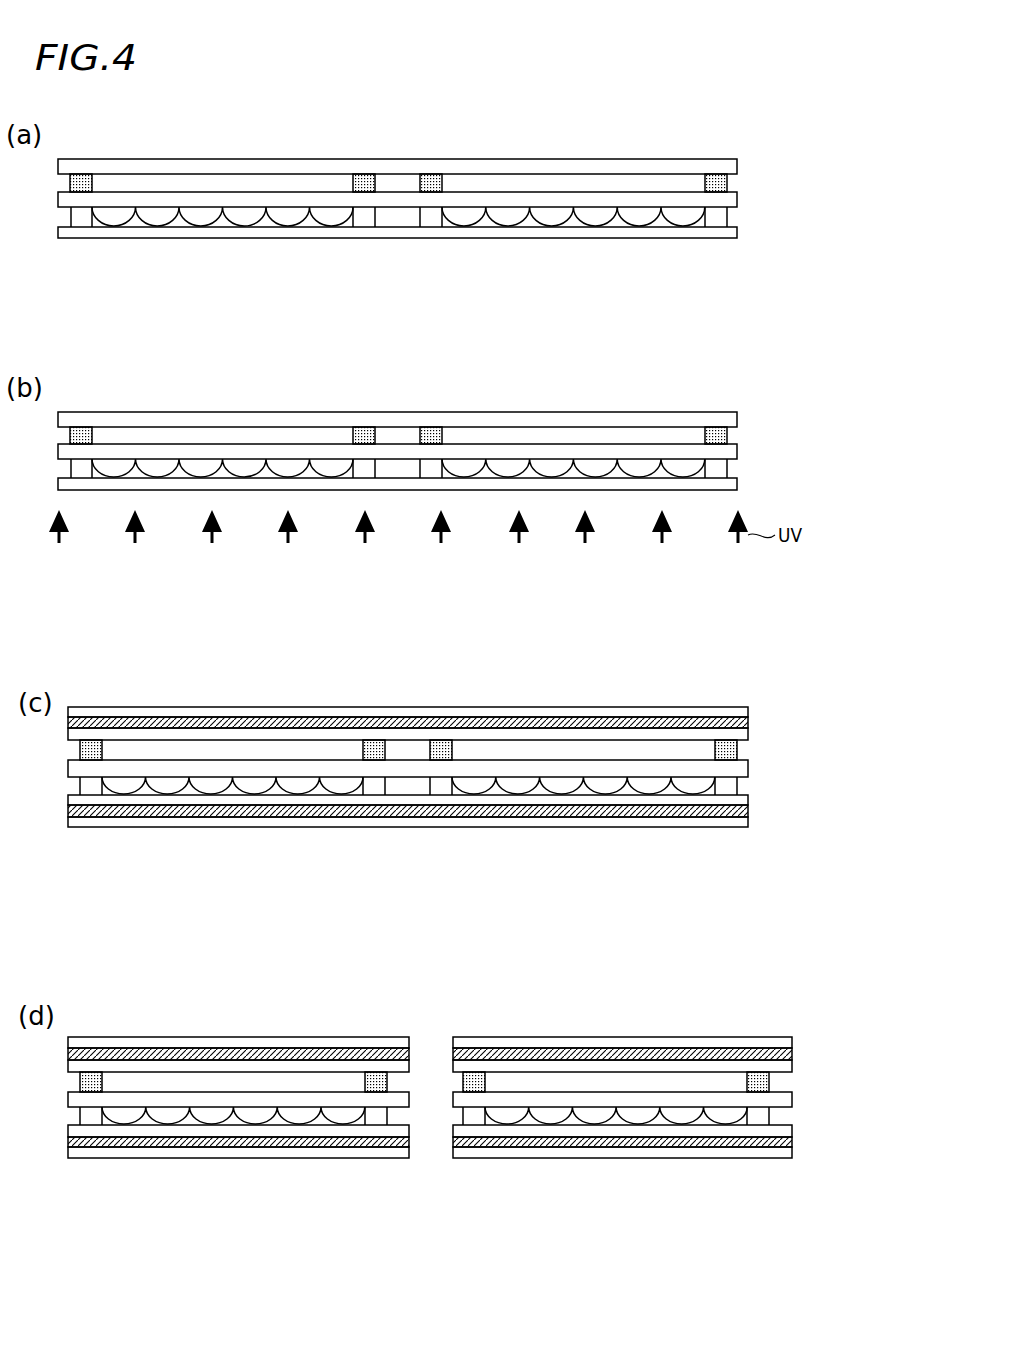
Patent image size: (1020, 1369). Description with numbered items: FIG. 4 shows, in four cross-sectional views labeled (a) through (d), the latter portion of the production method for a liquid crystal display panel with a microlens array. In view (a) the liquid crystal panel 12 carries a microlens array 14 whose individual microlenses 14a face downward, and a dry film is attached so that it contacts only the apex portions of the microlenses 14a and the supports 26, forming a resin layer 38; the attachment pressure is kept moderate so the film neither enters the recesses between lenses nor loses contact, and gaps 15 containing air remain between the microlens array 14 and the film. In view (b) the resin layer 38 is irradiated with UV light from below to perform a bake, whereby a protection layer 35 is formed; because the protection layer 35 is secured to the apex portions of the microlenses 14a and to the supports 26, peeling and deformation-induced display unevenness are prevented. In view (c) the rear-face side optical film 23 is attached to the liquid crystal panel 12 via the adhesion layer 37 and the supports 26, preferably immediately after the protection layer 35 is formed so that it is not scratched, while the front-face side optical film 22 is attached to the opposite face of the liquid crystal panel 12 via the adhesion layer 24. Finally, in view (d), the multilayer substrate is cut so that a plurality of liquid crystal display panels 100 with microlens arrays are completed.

The liquid crystal panel 12 is at (747, 160).
The microlens array 14 is at (403, 539).
The microlens 14a is at (596, 222).
The gap 15 is at (533, 219).
The front-face side optical film 22 is at (748, 710).
The rear-face side optical film 23 is at (748, 827).
The adhesion layer 24 is at (748, 722).
The support 26 is at (434, 219).
The protection layer 35 is at (738, 483).
The adhesion layer 37 is at (748, 812).
The resin layer 38 is at (737, 232).
The liquid crystal display panel 100 is at (380, 1025).